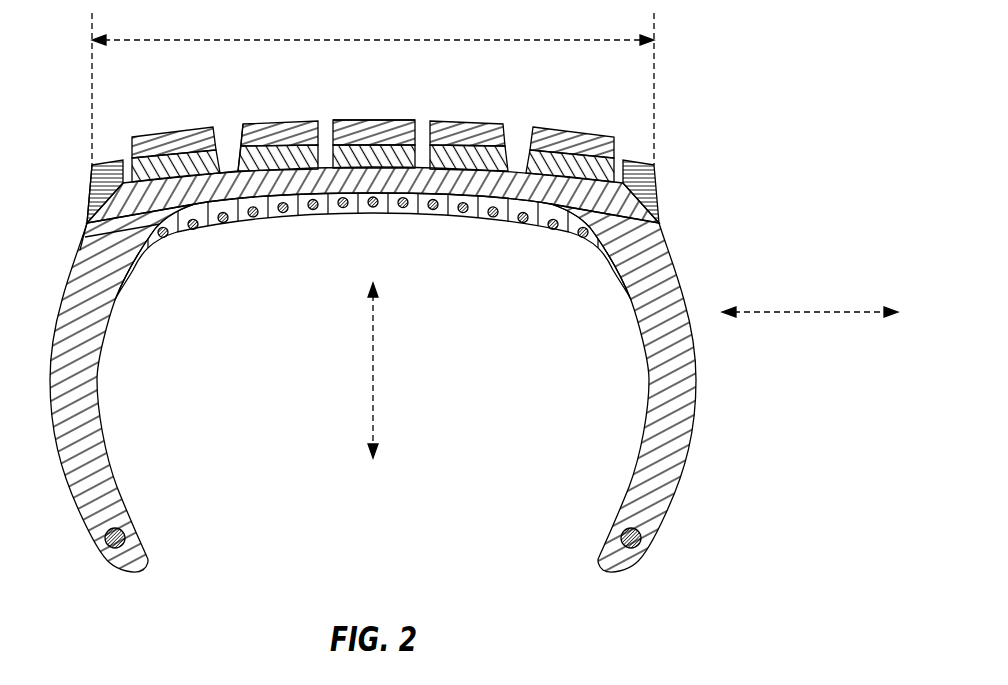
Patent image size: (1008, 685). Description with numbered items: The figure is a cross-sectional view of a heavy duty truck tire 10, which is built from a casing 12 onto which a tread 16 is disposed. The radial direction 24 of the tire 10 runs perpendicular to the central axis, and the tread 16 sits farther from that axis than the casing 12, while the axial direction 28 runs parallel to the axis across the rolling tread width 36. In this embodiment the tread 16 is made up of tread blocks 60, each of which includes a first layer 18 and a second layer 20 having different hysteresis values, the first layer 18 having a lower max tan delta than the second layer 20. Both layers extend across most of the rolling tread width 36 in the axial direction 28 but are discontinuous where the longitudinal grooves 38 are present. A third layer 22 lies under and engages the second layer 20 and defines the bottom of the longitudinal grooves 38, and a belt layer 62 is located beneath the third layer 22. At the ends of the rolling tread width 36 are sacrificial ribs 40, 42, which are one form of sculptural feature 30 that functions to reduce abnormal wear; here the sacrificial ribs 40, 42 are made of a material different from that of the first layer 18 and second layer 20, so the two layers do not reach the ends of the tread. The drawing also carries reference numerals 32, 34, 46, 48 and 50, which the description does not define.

The tire 10 is at (741, 123).
The casing 12 is at (677, 453).
The tread 16 is at (162, 167).
The first layer 18 is at (450, 127).
The second layer 20 is at (482, 150).
The third layer 22 is at (290, 182).
The radial direction 24 is at (373, 372).
The axial direction 28 is at (813, 313).
The sculptural feature 30 is at (88, 203).
The first tread edge 32 is at (90, 166).
The second tread edge 34 is at (654, 167).
The rolling tread width 36 is at (332, 38).
The longitudinal grooves 38 is at (228, 135).
The sacrificial rib 40 is at (90, 187).
The sacrificial rib 42 is at (657, 180).
The cap rubber layer 46 is at (353, 133).
The groove wall 48 is at (240, 135).
The tread surface 50 is at (371, 110).
The tread blocks 60 is at (380, 150).
The belt layer 62 is at (507, 215).